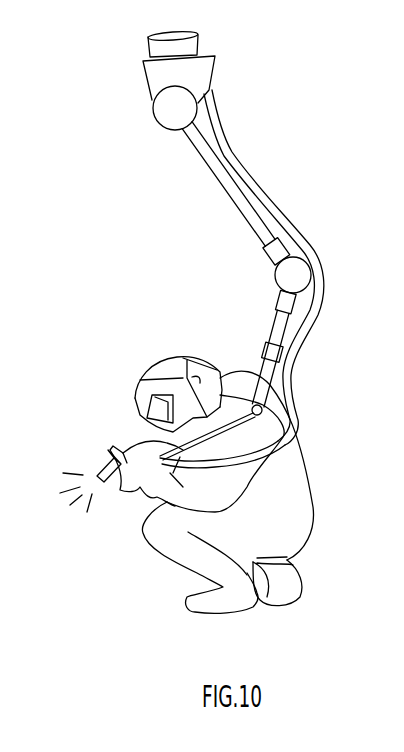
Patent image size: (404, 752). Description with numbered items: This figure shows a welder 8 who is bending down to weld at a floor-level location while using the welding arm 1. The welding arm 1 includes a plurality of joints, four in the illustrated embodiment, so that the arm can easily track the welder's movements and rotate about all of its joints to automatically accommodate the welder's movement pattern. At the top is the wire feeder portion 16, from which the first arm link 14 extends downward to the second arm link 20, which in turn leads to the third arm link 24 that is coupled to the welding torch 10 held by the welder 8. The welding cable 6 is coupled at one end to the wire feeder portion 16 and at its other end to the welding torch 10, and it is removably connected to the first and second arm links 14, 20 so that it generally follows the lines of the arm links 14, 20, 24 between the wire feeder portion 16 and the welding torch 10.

The welding arm 1 is at (228, 237).
The welding cable 6 is at (327, 275).
The welder 8 is at (150, 368).
The welding torch 10 is at (100, 472).
The first arm link 14 is at (222, 188).
The wire feeder portion 16 is at (143, 86).
The second arm link 20 is at (270, 337).
The third arm link 24 is at (270, 449).